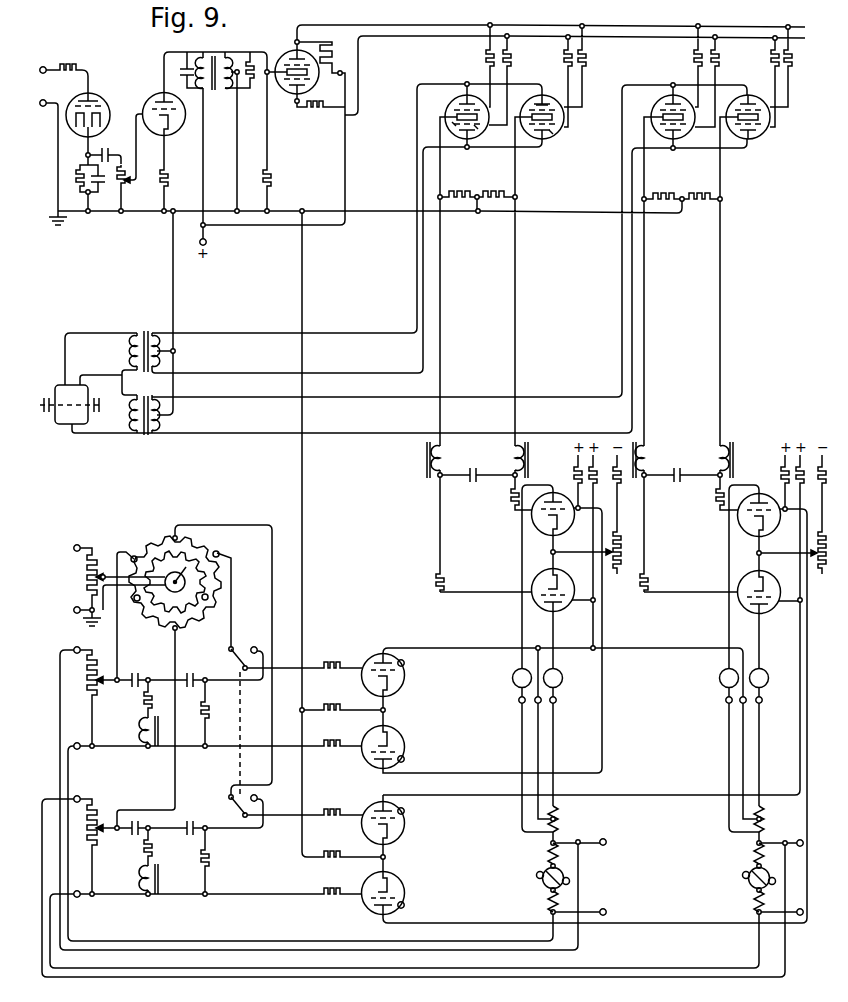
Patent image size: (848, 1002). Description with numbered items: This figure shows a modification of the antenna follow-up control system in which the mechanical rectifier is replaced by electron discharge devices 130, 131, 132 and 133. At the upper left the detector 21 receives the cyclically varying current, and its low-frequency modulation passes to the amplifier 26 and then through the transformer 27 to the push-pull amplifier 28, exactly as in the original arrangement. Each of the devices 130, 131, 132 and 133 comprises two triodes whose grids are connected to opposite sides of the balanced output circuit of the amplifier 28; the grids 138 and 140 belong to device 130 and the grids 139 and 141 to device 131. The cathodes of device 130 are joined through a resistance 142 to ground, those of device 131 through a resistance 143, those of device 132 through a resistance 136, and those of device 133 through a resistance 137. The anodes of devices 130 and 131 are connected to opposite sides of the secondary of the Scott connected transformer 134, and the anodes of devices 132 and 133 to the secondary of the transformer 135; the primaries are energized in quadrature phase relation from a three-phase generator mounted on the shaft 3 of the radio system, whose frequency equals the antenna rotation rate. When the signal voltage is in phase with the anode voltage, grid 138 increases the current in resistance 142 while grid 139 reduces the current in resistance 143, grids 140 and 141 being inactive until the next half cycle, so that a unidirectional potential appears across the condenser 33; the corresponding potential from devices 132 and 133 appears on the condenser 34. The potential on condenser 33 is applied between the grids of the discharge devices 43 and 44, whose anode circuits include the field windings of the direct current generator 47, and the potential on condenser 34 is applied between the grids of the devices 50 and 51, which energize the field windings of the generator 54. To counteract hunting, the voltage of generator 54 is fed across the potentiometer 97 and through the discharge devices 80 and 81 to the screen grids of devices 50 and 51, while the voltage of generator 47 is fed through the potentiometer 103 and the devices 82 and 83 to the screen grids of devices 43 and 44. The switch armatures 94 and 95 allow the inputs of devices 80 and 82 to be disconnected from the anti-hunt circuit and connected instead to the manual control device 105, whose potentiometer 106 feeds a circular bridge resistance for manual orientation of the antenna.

The detector 21 is at (94, 100).
The amplifier 26 is at (157, 99).
The transformer 27 is at (214, 90).
The push-pull amplifier 28 is at (287, 54).
The grid 138 is at (455, 104).
The grid 139 is at (533, 106).
The electron discharge device 132 is at (655, 106).
The electron discharge device 133 is at (752, 95).
The electron discharge device 131 is at (552, 97).
The grid 140 is at (448, 124).
The electron discharge device 130 is at (479, 128).
The grid 141 is at (553, 133).
The resistance 142 is at (458, 191).
The resistance 143 is at (494, 191).
The resistance 136 is at (660, 193).
The resistance 137 is at (700, 193).
The Scott connected transformer 134 is at (145, 330).
The Scott connected transformer 135 is at (147, 437).
The shaft 3 is at (46, 394).
The condenser 33 is at (474, 470).
The condenser 34 is at (682, 468).
The electron discharge device 50 is at (554, 490).
The electron discharge device 51 is at (545, 573).
The electron discharge device 43 is at (750, 534).
The electron discharge device 44 is at (766, 609).
The manual control device 105 is at (176, 523).
The potentiometer 106 is at (88, 564).
The potentiometer 97 is at (88, 679).
The potentiometer 103 is at (98, 806).
The armature 94 is at (236, 659).
The armature 95 is at (232, 806).
The discharge device 80 is at (405, 676).
The discharge device 81 is at (405, 736).
The discharge device 82 is at (405, 826).
The discharge device 83 is at (405, 879).
The direct current generator 54 is at (543, 885).
The direct current generator 47 is at (745, 886).